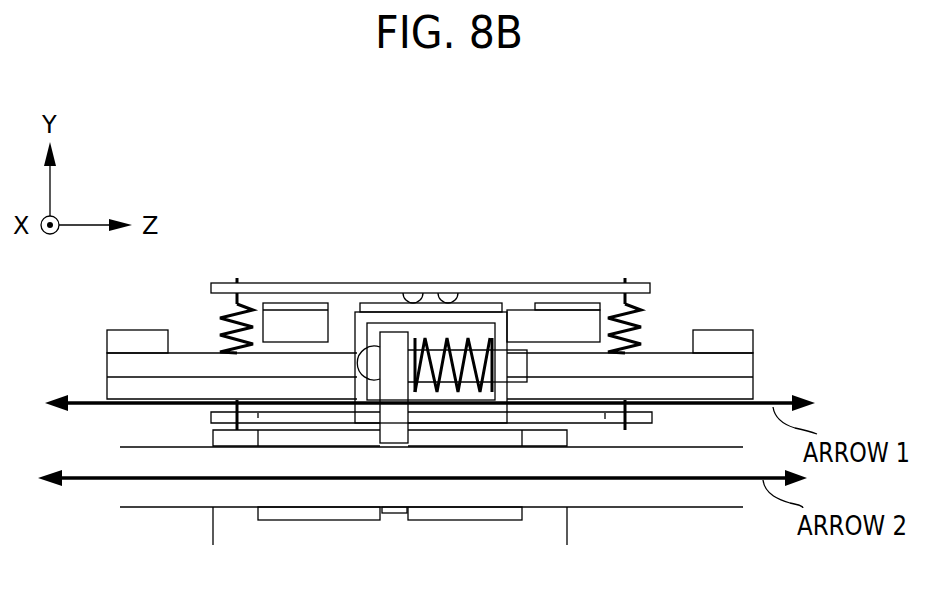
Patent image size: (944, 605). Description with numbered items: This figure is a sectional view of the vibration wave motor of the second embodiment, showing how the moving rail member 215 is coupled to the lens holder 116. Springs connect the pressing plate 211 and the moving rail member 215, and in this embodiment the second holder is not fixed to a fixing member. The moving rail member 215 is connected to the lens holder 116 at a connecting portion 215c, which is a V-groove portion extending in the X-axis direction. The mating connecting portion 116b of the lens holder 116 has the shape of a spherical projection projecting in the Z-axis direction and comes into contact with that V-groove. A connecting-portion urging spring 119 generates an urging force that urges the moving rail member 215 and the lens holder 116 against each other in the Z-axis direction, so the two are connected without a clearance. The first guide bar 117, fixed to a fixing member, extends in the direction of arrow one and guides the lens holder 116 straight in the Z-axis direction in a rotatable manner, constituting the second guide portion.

The pressing plate 211 is at (255, 286).
The moving rail member 215 is at (441, 401).
The connecting portion 215c is at (363, 343).
The lens holder 116 is at (217, 535).
The connecting portion 116b is at (373, 382).
The connecting-portion urging spring 119 is at (478, 387).
The first guide bar 117 is at (713, 500).